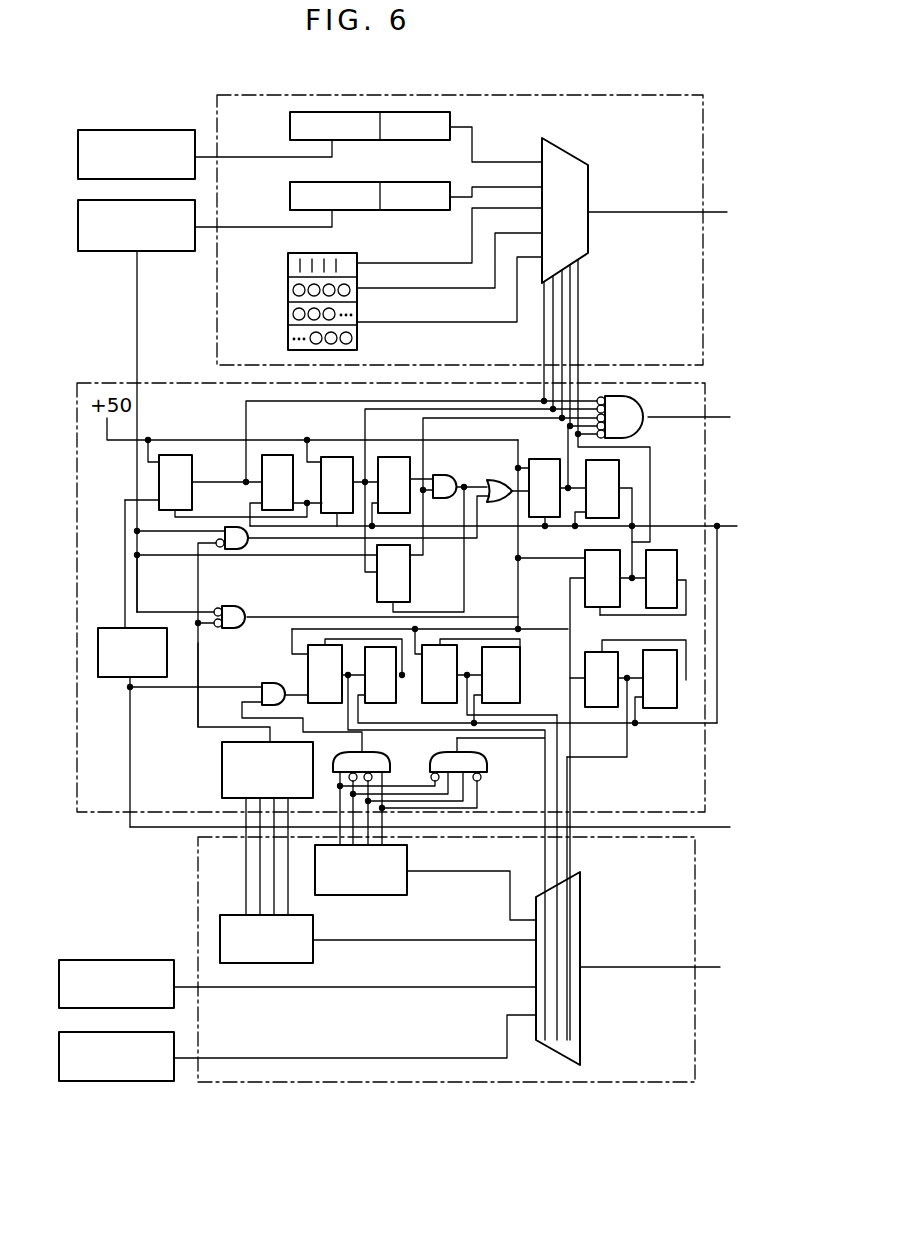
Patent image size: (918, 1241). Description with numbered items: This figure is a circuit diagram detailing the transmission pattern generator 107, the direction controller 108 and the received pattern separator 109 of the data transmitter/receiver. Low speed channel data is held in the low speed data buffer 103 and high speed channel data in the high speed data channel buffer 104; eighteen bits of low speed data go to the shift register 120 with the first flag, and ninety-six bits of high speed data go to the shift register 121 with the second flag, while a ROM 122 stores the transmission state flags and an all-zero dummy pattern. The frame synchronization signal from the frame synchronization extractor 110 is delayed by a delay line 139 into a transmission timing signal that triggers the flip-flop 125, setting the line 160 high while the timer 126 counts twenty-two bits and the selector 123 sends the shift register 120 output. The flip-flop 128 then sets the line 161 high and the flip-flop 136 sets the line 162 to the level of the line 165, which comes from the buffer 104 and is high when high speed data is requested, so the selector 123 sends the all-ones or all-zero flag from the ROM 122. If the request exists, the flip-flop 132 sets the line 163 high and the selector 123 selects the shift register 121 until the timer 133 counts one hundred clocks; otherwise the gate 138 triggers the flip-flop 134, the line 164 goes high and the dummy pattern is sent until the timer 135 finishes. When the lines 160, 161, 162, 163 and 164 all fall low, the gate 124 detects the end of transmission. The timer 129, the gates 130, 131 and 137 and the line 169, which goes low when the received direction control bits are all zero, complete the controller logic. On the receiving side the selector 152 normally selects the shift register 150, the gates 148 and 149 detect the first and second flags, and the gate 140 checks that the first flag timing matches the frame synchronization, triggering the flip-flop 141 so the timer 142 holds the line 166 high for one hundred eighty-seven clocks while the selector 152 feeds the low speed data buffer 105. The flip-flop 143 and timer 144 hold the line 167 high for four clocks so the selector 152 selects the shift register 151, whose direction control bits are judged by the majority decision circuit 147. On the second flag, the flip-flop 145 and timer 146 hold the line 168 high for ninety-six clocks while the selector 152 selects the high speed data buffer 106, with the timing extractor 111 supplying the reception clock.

The low speed data buffer 103 is at (142, 129).
The high speed data channel buffer 104 is at (112, 251).
The low speed data buffer 105 is at (120, 960).
The high speed data buffer 106 is at (118, 1081).
The transmission data pattern generator 107 is at (703, 340).
The direction controller 108 is at (77, 812).
The received signal separator 109 is at (198, 848).
The frame synchronization extractor 110 is at (456, 835).
The timing extractor 111 is at (753, 618).
The shift register 120 is at (370, 140).
The shift register 121 is at (368, 210).
The ROM 122 is at (288, 326).
The selector 123 is at (571, 164).
The gate 124 is at (650, 404).
The flip-flop 125 is at (193, 462).
The timer 126 is at (262, 500).
The flip-flop 128 is at (326, 448).
The timer 129 is at (395, 457).
The AND gate 130 is at (450, 476).
The OR gate 131 is at (507, 479).
The flip-flop 132 is at (536, 462).
The timer 133 is at (620, 475).
The flip-flop 134 is at (585, 580).
The timer 135 is at (662, 550).
The flip-flop 136 is at (376, 592).
The NAND gate 137 is at (244, 551).
The gate 138 is at (247, 612).
The delay line 139 is at (105, 677).
The gate 140 is at (265, 683).
The flip-flop 141 is at (308, 669).
The timer 142 is at (378, 642).
The flip-flop 143 is at (433, 620).
The timer 144 is at (520, 698).
The flip-flop 145 is at (585, 671).
The timer 146 is at (660, 708).
The majority decision circuit 147 is at (222, 767).
The gate 148 is at (400, 755).
The gate 149 is at (485, 757).
The shift register 150 is at (367, 895).
The shift register 151 is at (313, 958).
The selector 152 is at (582, 1020).
The line 160 is at (246, 413).
The line 161 is at (365, 413).
The line 162 is at (426, 433).
The line 163 is at (565, 430).
The line 164 is at (650, 447).
The line 165 is at (137, 585).
The line 166 is at (543, 783).
The line 167 is at (567, 757).
The line 168 is at (557, 800).
The line 169 is at (197, 714).